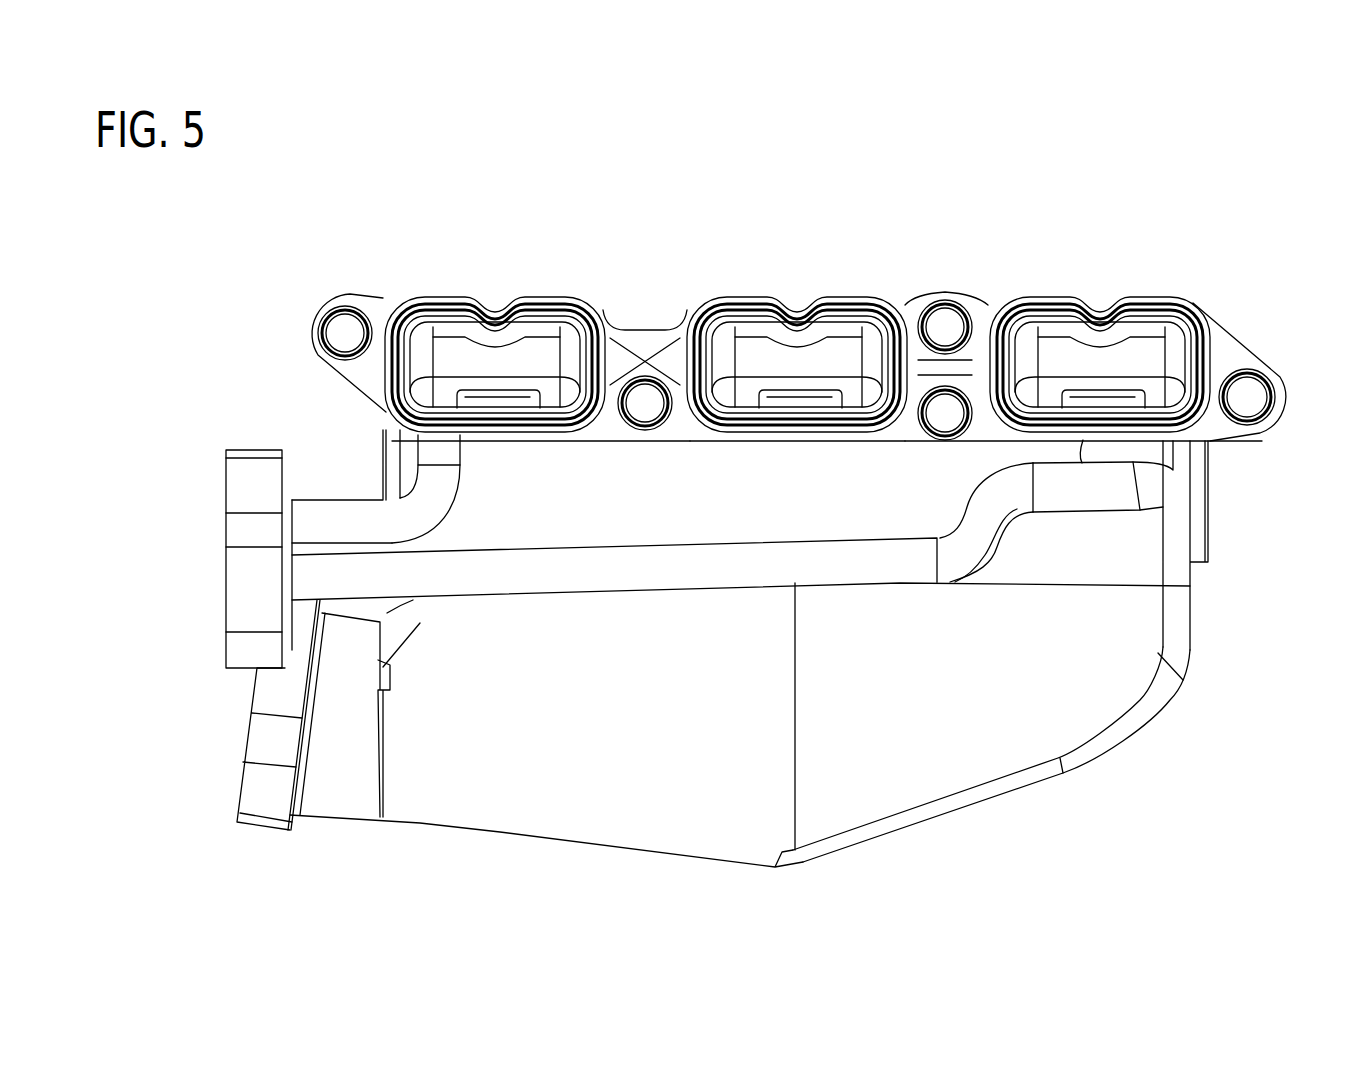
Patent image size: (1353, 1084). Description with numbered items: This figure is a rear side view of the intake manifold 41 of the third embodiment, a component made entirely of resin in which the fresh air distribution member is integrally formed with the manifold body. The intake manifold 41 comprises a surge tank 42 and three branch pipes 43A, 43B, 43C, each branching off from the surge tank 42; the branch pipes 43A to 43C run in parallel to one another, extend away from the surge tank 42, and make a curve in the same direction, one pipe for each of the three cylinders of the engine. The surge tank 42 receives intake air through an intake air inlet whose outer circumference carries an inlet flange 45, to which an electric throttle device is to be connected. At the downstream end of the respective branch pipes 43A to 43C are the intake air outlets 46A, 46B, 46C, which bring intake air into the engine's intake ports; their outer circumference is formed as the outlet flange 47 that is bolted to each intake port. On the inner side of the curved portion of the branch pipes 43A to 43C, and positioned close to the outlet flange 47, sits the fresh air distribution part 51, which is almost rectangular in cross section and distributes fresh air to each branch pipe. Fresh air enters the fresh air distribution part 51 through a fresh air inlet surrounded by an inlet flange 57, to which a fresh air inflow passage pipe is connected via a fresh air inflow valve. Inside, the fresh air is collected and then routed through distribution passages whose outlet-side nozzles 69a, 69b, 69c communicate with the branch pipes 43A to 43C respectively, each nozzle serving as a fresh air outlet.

The intake manifold 41 is at (1208, 260).
The surge tank 42 is at (550, 806).
The branch pipe 43A is at (495, 328).
The branch pipe 43B is at (797, 328).
The branch pipe 43C is at (1100, 328).
The inlet flange 45 is at (248, 743).
The intake air outlet 46A is at (495, 324).
The intake air outlet 46B is at (797, 324).
The intake air outlet 46C is at (1100, 324).
The outlet flange 47 is at (1225, 334).
The fresh air distribution part 51 is at (893, 565).
The inlet flange 57 is at (247, 449).
The nozzle 69a is at (502, 436).
The nozzle 69b is at (804, 432).
The nozzle 69c is at (1094, 438).